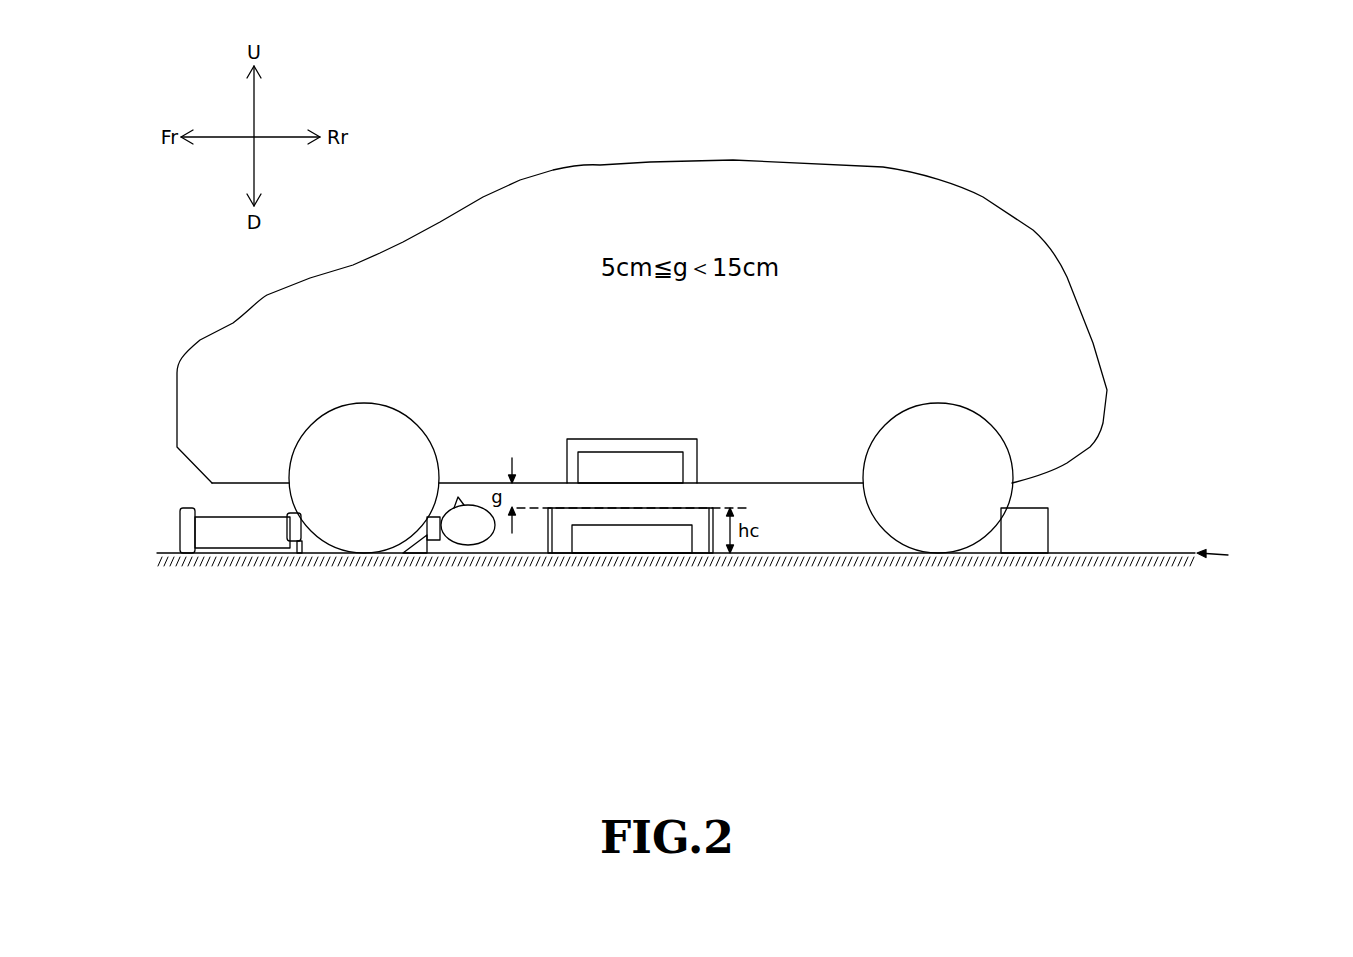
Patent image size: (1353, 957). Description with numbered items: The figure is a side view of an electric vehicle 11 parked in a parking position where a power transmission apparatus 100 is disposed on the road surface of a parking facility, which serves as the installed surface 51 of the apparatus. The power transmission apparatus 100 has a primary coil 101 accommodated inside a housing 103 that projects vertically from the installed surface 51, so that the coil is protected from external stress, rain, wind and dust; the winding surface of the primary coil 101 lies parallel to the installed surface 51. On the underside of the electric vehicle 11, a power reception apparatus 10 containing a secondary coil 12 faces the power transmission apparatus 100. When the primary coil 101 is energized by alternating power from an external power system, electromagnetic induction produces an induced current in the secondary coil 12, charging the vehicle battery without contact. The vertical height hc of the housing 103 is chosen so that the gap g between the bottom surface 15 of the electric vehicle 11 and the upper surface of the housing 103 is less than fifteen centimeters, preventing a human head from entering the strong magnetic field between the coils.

The electric vehicle 11 is at (738, 160).
The power reception apparatus 10 is at (683, 432).
The secondary coil 12 is at (590, 452).
The bottom surface 15 is at (807, 483).
The power transmission apparatus 100 is at (562, 500).
The primary coil 101 is at (703, 532).
The housing 103 is at (546, 538).
The installed surface 51 is at (1093, 553).